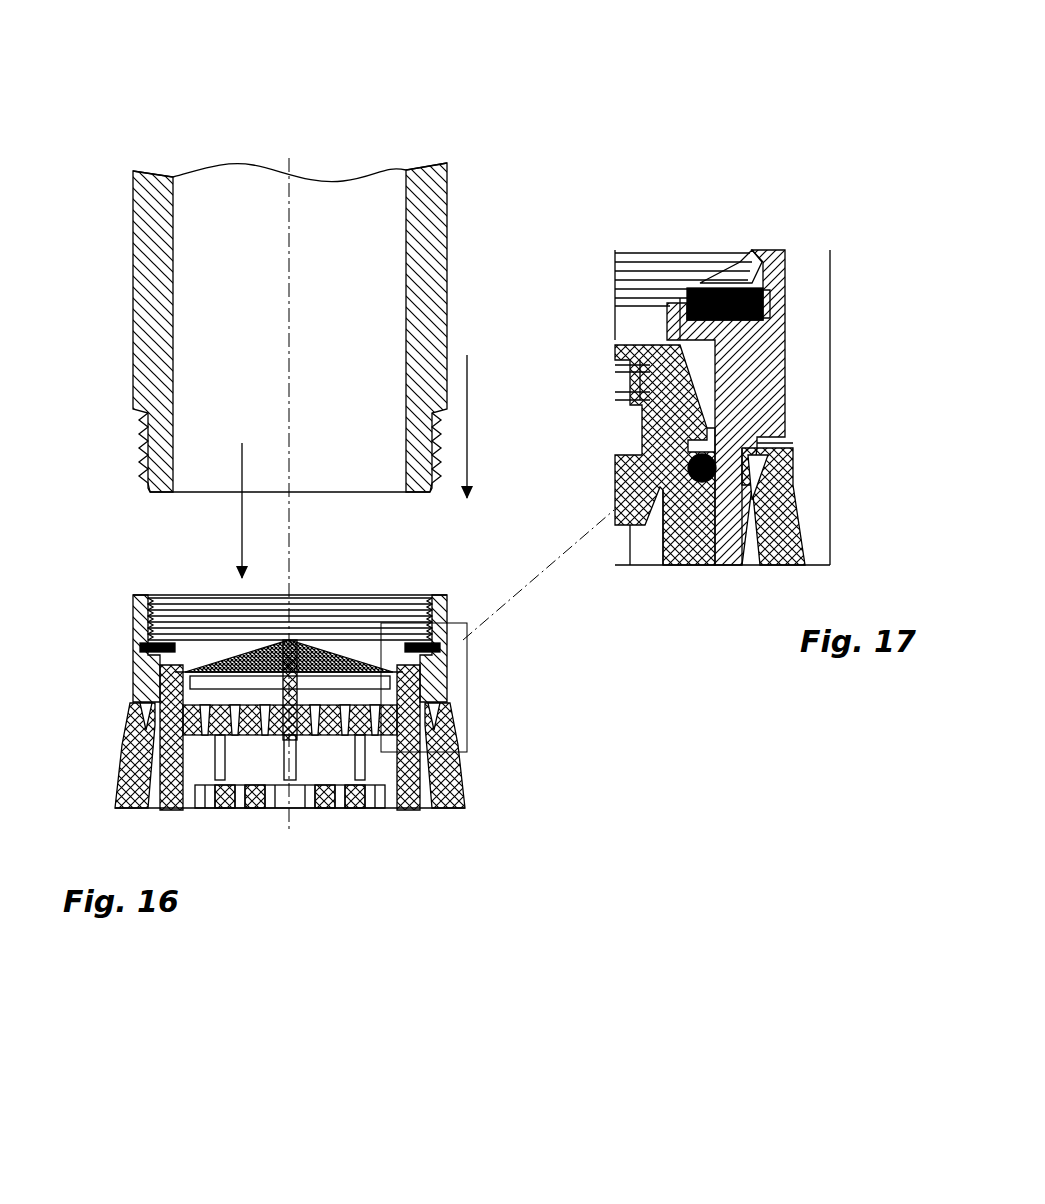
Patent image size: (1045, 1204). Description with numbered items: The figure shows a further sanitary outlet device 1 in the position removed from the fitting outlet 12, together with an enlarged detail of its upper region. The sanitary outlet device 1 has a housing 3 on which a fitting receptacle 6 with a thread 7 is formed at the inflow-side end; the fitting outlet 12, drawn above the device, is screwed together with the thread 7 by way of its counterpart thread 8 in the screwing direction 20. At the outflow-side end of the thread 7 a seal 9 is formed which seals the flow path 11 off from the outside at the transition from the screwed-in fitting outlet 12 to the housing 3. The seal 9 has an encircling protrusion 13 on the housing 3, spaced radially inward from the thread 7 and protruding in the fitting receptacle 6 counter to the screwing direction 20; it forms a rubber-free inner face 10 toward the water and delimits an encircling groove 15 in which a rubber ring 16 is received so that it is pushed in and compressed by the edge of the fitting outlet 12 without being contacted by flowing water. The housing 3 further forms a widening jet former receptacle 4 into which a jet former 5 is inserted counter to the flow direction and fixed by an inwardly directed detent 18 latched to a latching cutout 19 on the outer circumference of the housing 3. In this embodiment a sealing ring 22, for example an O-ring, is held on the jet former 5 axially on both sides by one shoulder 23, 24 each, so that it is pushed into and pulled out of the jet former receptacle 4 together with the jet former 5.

In FIG. 16, the sanitary outlet device 1 is at (334, 930).
In FIG. 16, the housing 3 is at (445, 676).
In FIG. 16, the jet former receptacle 4 is at (421, 826).
In FIG. 17, the jet former receptacle 4 is at (720, 569).
In FIG. 16, the jet former 5 is at (258, 752).
In FIG. 17, the jet former 5 is at (668, 387).
In FIG. 16, the fitting receptacle 6 is at (422, 576).
In FIG. 16, the thread 7 is at (185, 597).
In FIG. 16, the counterpart thread 8 is at (140, 442).
In FIG. 17, the seal 9 is at (728, 262).
In FIG. 17, the rubber-free inner face 10 is at (617, 315).
In FIG. 16, the flow path 11 is at (270, 510).
In FIG. 16, the fitting outlet 12 is at (145, 240).
In FIG. 17, the protrusion 13 is at (672, 305).
In FIG. 17, the groove 15 is at (768, 310).
In FIG. 17, the rubber ring 16 is at (736, 287).
In FIG. 17, the detent 18 is at (745, 492).
In FIG. 17, the latching cutout 19 is at (793, 447).
In FIG. 16, the screwing direction 20 is at (495, 426).
In FIG. 17, the sealing ring 22 is at (672, 485).
In FIG. 17, the shoulder 23 is at (700, 497).
In FIG. 17, the shoulder 24 is at (713, 432).